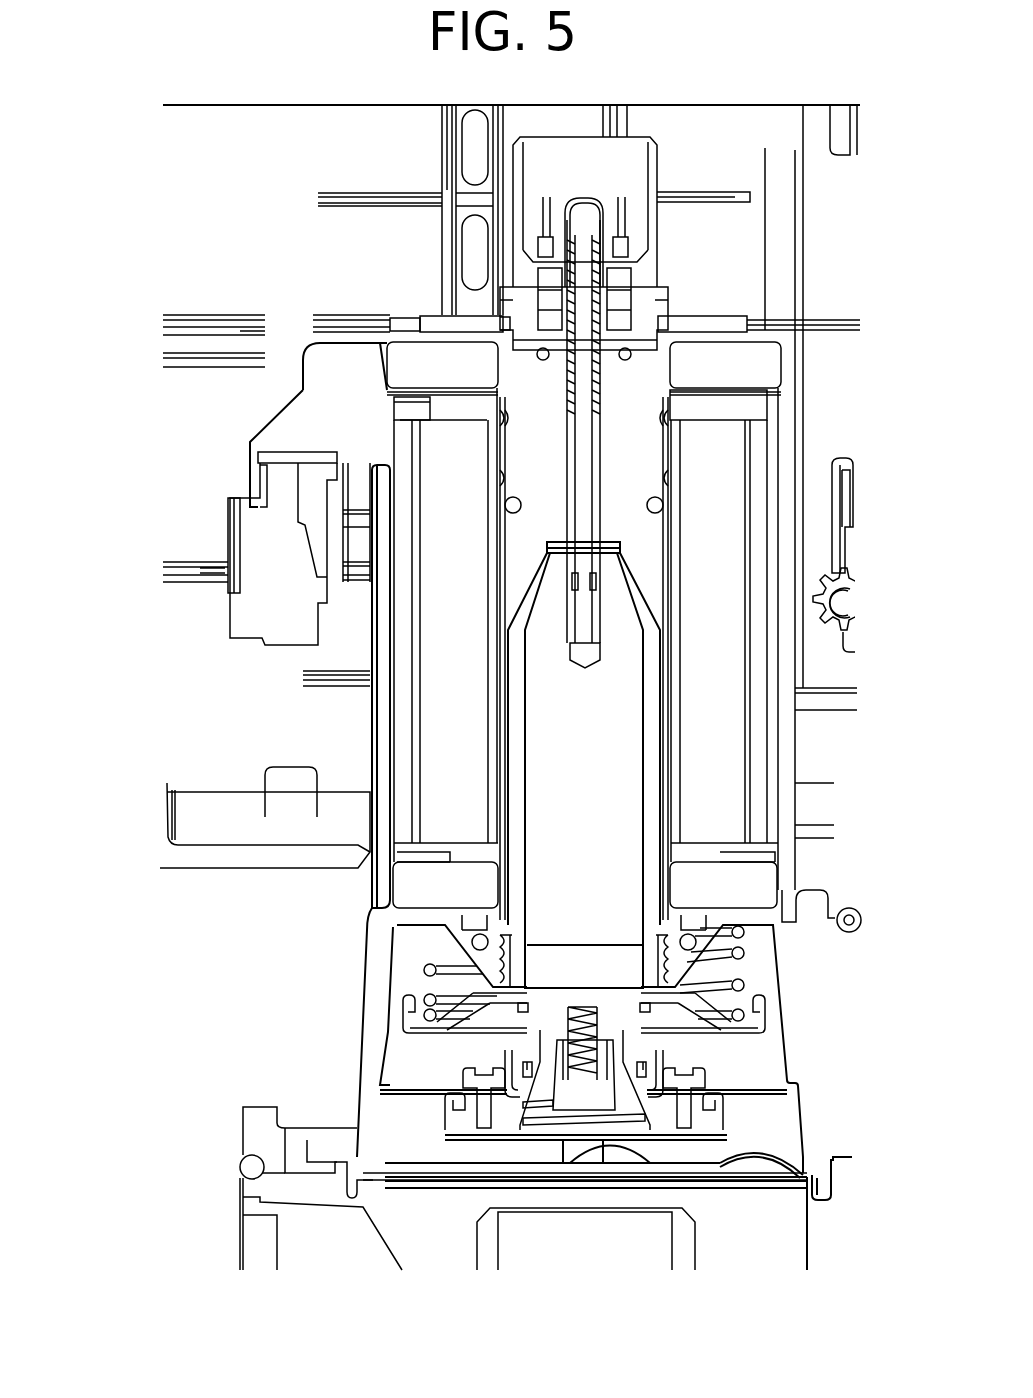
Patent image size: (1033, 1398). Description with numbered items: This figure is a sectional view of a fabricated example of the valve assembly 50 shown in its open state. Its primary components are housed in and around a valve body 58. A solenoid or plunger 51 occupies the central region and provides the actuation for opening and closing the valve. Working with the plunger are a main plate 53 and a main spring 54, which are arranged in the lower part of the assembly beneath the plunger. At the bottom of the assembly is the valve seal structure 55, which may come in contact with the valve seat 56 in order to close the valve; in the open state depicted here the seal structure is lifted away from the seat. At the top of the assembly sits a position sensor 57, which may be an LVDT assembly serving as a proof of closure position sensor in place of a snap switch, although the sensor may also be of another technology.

The valve assembly 50 is at (108, 246).
The solenoid or plunger 51 is at (540, 668).
The main plate 53 is at (403, 1012).
The main spring 54 is at (423, 969).
The valve seal structure 55 is at (476, 1176).
The valve seat 56 is at (683, 1240).
The position sensor 57 is at (614, 272).
The valve body 58 is at (333, 1140).